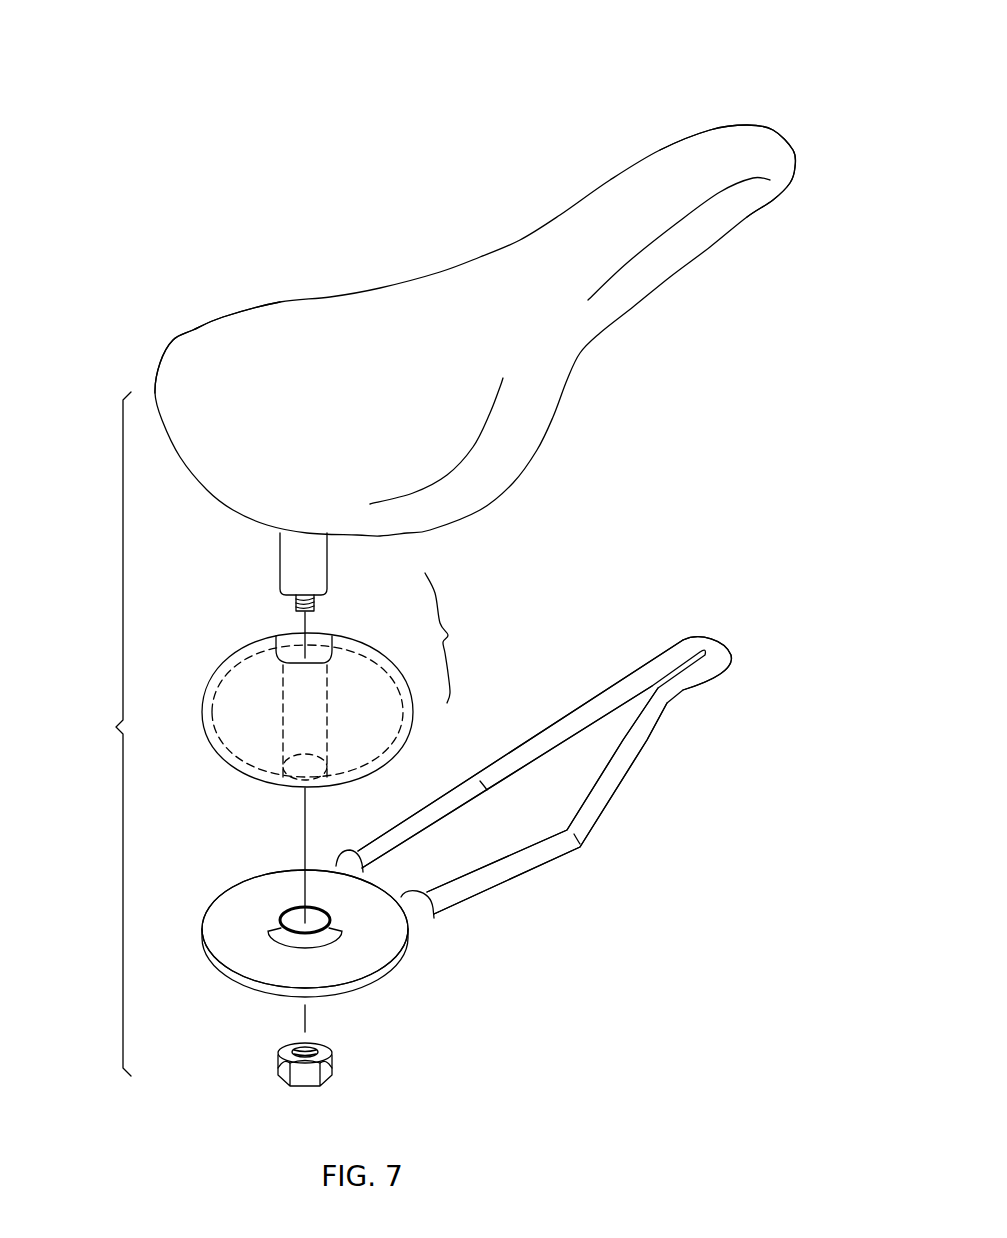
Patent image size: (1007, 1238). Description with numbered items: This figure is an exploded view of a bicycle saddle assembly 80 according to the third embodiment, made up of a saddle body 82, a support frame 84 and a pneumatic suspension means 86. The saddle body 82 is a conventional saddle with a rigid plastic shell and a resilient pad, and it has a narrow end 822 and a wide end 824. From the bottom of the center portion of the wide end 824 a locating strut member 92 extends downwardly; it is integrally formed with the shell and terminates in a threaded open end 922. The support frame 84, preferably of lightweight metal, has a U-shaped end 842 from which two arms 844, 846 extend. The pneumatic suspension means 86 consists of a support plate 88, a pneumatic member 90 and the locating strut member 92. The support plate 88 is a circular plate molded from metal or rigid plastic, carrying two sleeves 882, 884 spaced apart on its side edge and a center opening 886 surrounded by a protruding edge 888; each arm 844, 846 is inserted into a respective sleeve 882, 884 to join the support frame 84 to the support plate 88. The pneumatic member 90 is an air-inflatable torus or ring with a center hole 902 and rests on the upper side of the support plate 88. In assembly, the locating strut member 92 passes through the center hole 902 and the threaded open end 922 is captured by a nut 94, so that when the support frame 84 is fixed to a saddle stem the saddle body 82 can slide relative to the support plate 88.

The bicycle saddle assembly 80 is at (103, 747).
The saddle body 82 is at (463, 238).
The narrow end 822 is at (730, 135).
The wide end 824 is at (207, 363).
The support frame 84 is at (649, 763).
The U-shaped end 842 is at (707, 640).
The arm 844 is at (547, 738).
The arm 846 is at (533, 858).
The pneumatic suspension means 86 is at (494, 611).
The support plate 88 is at (370, 960).
The sleeve 882 is at (337, 858).
The sleeve 884 is at (432, 922).
The center opening 886 is at (297, 913).
The protruding edge 888 is at (288, 935).
The pneumatic member 90 is at (240, 735).
The center hole 902 is at (313, 645).
The locating strut member 92 is at (292, 558).
The threaded open end 922 is at (298, 606).
The nut 94 is at (338, 1079).